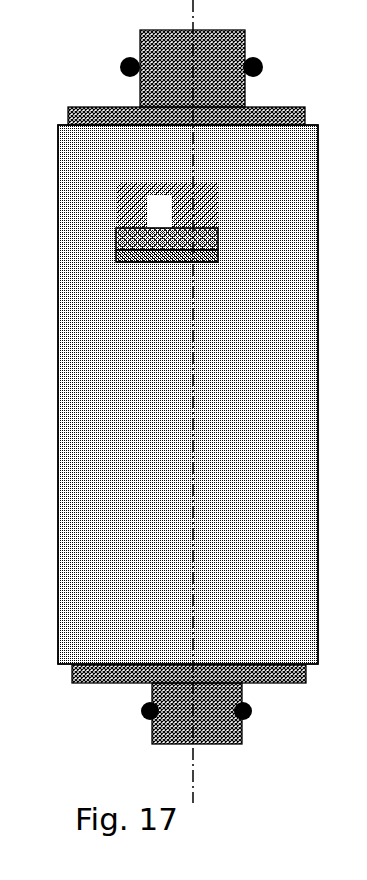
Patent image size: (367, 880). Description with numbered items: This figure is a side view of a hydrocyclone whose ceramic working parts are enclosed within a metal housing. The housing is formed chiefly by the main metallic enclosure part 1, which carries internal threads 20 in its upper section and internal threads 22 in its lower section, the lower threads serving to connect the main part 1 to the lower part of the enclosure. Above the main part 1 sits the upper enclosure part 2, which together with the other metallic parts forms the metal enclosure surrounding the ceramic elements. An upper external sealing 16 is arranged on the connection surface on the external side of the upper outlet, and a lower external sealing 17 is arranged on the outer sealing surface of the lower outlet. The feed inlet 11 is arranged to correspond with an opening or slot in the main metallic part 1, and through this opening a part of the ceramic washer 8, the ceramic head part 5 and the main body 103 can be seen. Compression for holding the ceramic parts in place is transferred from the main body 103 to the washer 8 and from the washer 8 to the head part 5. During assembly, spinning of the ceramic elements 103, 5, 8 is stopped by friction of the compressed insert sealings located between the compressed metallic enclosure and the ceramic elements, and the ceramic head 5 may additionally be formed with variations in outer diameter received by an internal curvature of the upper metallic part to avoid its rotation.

The main metallic enclosure part 1 is at (92, 447).
The upper enclosure part 2 is at (160, 365).
The head part 5 is at (118, 196).
The ceramic washer 8 is at (116, 237).
The feed inlet 11 is at (155, 216).
The upper external sealing 16 is at (130, 60).
The lower external sealing 17 is at (150, 722).
The internal threads 20 is at (68, 112).
The internal threads 22 is at (72, 672).
The integral lower part of the ceramic main body 103 is at (143, 264).